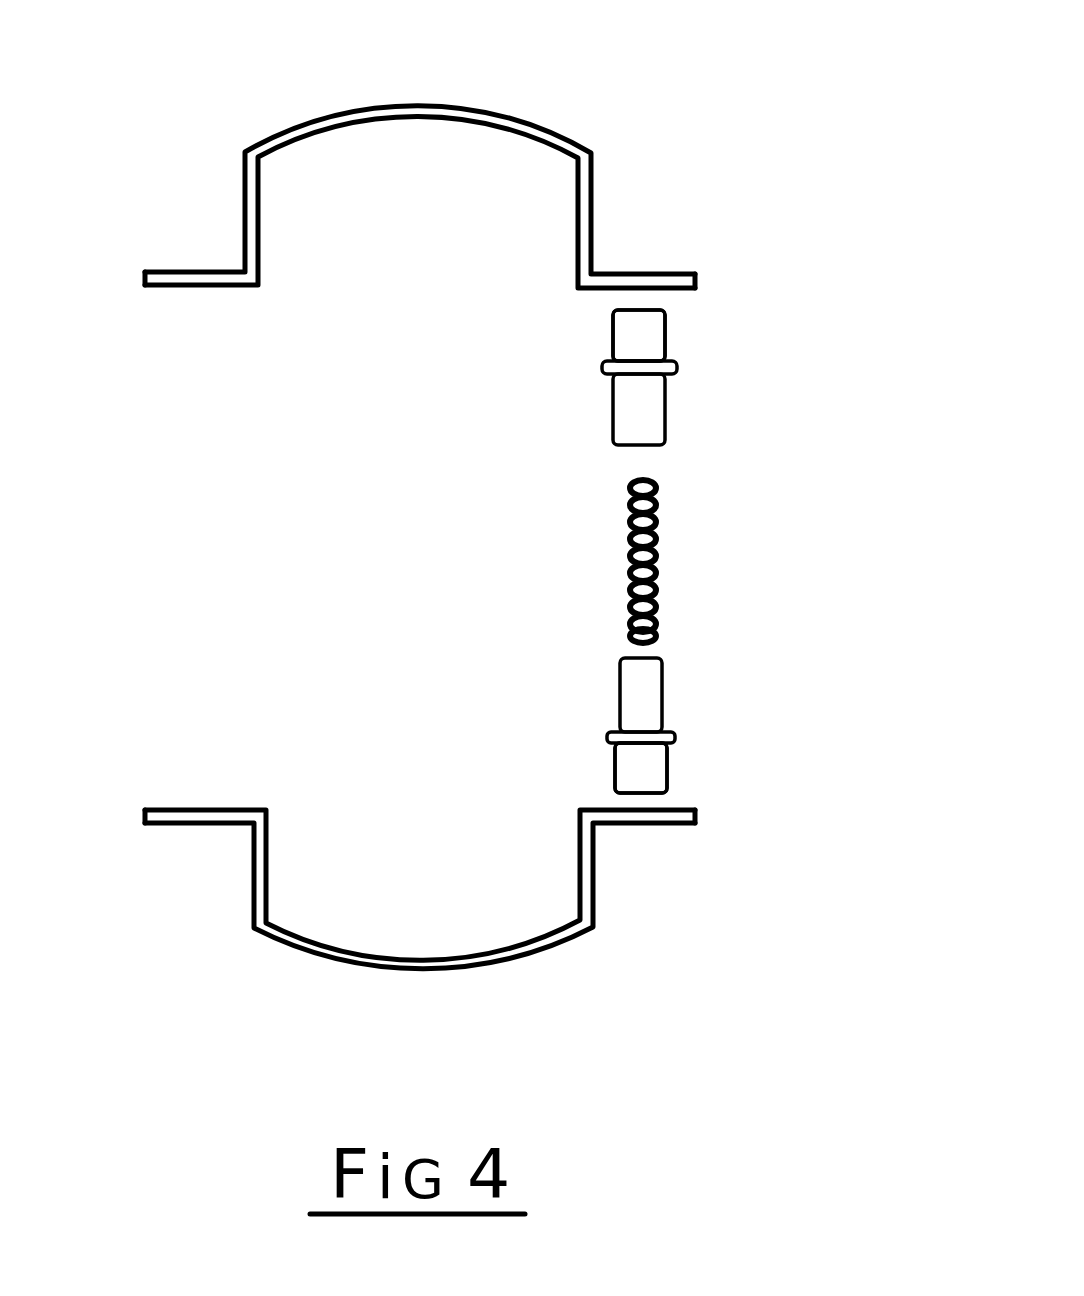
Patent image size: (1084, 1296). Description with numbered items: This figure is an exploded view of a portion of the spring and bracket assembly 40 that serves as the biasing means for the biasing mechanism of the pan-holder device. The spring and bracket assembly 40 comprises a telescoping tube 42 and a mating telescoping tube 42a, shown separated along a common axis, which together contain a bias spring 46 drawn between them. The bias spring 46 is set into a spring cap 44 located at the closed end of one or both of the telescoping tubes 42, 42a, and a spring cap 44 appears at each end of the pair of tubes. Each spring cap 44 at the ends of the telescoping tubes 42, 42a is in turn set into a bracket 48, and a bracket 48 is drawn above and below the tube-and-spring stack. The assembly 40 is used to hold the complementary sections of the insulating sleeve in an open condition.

The spring and bracket assembly 40 is at (503, 501).
The telescoping tube 42 is at (668, 395).
The telescoping tube 42a is at (701, 725).
The spring cap 44 is at (665, 327).
The bias spring 46 is at (653, 553).
The bracket 48 is at (565, 130).